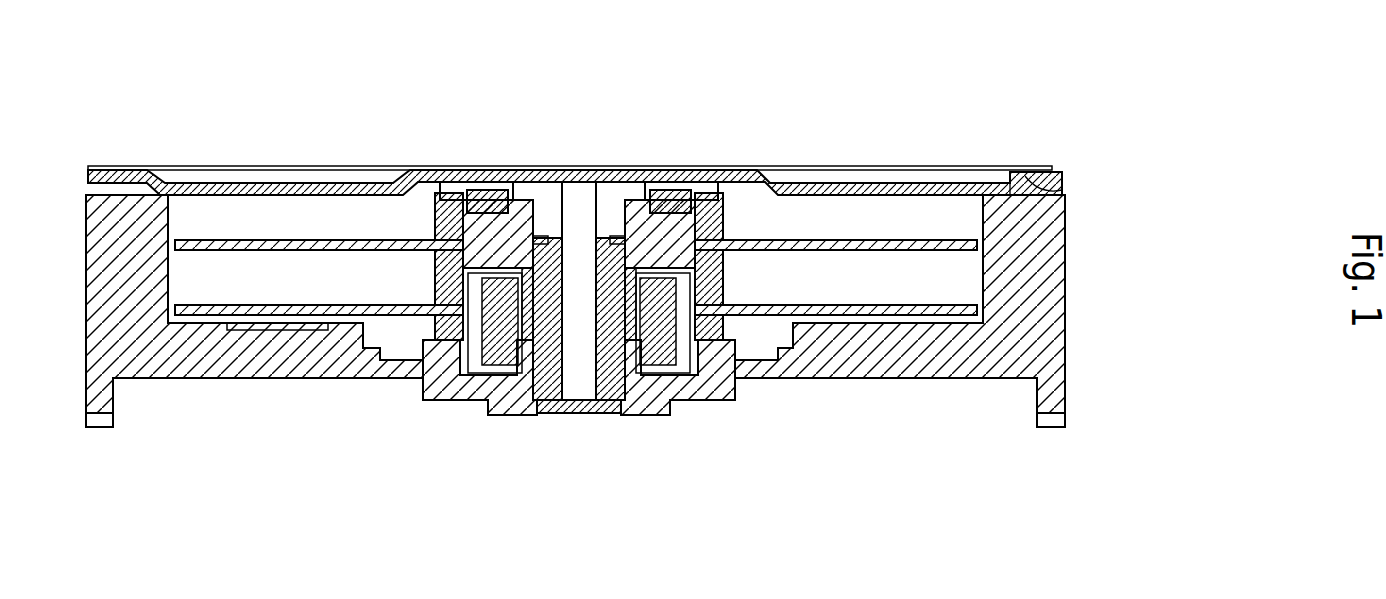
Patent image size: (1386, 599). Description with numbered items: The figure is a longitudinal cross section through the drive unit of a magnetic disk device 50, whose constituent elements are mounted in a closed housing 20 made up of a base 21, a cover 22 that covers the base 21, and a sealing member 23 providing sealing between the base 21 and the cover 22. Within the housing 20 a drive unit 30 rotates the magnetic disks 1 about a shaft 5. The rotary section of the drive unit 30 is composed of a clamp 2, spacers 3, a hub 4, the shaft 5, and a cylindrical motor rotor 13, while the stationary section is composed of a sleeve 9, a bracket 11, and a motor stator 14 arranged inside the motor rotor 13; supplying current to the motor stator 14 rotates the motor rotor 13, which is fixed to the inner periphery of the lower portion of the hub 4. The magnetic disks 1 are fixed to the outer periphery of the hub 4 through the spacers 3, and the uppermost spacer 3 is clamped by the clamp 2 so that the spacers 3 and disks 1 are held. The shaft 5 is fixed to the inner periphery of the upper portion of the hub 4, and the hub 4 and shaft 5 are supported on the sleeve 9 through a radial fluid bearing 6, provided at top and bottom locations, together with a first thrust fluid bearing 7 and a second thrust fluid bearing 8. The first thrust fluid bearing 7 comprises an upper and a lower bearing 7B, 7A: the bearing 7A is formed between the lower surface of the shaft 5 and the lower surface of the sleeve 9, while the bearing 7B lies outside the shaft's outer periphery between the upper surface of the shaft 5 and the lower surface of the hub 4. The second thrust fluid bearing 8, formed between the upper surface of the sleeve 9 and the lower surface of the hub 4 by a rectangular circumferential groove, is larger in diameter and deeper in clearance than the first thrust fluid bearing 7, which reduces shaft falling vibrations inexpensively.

The magnetic disks 1 is at (313, 240).
The clamp 2 is at (487, 185).
The spacers 3 is at (440, 277).
The hub 4 is at (512, 240).
The shaft 5 is at (558, 200).
The radial fluid bearing 6 is at (633, 270).
The first thrust fluid bearing 7 is at (590, 78).
The thrust fluid bearing 7A is at (593, 400).
The thrust fluid bearing 7B is at (581, 400).
The second thrust fluid bearing 8 is at (530, 340).
The sleeve 9 is at (555, 345).
The bracket 11 is at (650, 397).
The motor rotor 13 is at (690, 398).
The motor stator 14 is at (640, 410).
The housing 20 is at (1068, 297).
The base 21 is at (818, 365).
The cover 22 is at (934, 183).
The sealing member 23 is at (1018, 180).
The drive unit 30 is at (714, 409).
The magnetic disk device 50 is at (853, 147).